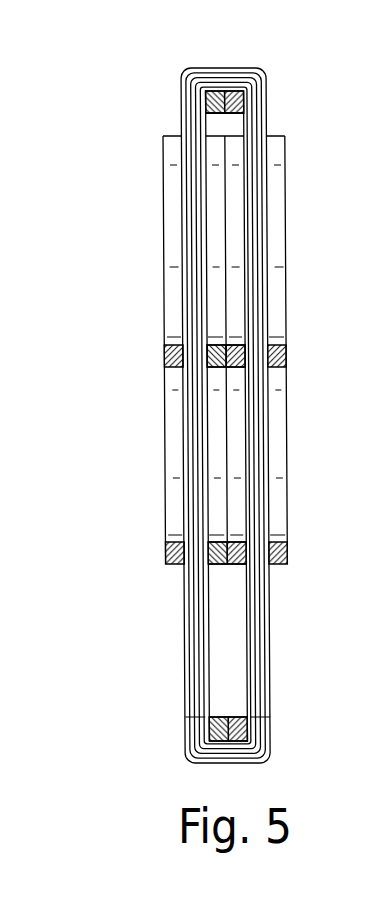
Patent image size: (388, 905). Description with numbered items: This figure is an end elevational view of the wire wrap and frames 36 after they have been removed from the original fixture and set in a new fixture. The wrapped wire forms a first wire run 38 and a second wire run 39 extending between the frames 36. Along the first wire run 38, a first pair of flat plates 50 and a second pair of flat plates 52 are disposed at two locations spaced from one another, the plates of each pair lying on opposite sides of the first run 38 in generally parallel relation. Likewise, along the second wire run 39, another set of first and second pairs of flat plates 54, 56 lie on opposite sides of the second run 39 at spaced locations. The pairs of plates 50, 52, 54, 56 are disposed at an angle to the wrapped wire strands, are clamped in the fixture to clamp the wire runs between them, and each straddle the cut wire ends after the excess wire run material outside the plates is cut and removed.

The frame 36 is at (211, 91).
The first wire run 38 is at (185, 170).
The second wire run 39 is at (260, 152).
The first pair of flat plates 50 is at (207, 366).
The second pair of flat plates 52 is at (207, 566).
The first pair of flat plates 54 is at (243, 367).
The second pair of flat plates 56 is at (245, 567).